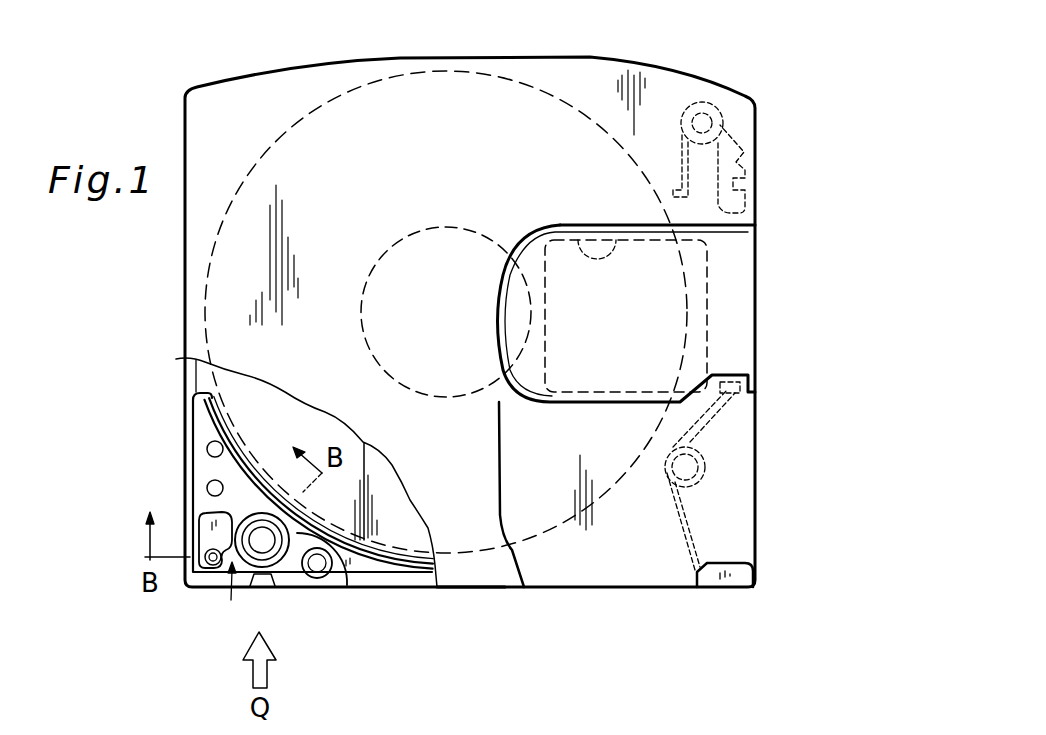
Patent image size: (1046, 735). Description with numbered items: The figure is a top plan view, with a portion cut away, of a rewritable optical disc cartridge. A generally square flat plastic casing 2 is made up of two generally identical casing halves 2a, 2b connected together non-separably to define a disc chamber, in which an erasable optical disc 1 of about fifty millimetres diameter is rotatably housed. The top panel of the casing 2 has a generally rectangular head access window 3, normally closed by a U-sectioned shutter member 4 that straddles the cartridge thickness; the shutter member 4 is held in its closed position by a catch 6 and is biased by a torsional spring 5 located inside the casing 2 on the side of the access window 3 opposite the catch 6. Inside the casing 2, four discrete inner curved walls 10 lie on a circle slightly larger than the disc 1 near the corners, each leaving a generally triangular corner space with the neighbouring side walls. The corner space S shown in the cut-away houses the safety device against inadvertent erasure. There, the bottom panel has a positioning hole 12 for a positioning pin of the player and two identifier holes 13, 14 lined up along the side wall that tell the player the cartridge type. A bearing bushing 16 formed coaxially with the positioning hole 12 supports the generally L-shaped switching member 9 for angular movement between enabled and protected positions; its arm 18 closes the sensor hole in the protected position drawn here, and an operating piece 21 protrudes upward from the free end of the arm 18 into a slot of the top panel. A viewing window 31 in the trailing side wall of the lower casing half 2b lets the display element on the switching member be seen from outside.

The erasable optical disc 1 is at (400, 72).
The casing 2 is at (258, 78).
The casing half 2a is at (476, 581).
The casing half 2b is at (402, 581).
The head access window 3 is at (578, 242).
The shutter member 4 is at (590, 378).
The torsional spring 5 is at (705, 472).
The catch 6 is at (740, 150).
The switching member 9 is at (230, 598).
The inner curved walls 10 is at (380, 545).
The positioning hole 12 is at (258, 530).
The identifier hole 13 is at (220, 482).
The identifier hole 14 is at (208, 445).
The bearing bushing 16 is at (278, 542).
The arm 18 is at (208, 518).
The operating piece 21 is at (213, 566).
The viewing window 31 is at (268, 588).
The triangular corner space S is at (350, 590).